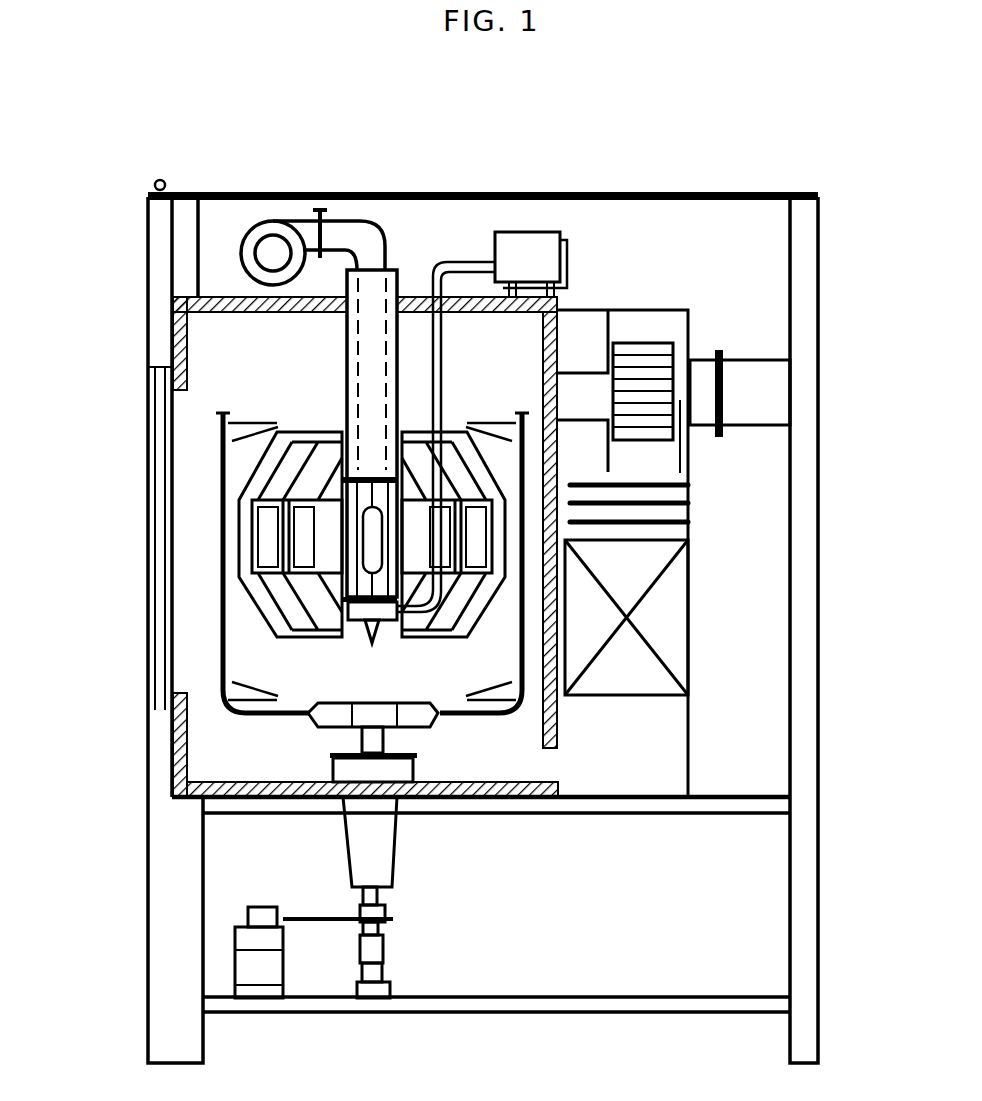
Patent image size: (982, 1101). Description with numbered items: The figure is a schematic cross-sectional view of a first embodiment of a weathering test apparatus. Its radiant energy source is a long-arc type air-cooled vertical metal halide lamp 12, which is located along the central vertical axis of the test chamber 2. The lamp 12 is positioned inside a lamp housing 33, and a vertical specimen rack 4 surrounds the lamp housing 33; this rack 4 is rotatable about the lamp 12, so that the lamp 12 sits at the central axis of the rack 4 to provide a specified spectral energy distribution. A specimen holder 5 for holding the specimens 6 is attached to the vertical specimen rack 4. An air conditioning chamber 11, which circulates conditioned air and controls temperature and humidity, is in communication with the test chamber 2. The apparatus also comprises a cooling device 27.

The test chamber 2 is at (217, 368).
The vertical specimen rack 4 is at (223, 478).
The specimen holder 5 is at (323, 423).
The specimens 6 is at (267, 537).
The air conditioning chamber 11 is at (627, 738).
The metal halide lamp 12 is at (367, 552).
The cooling device 27 is at (380, 645).
The lamp housing 33 is at (400, 463).